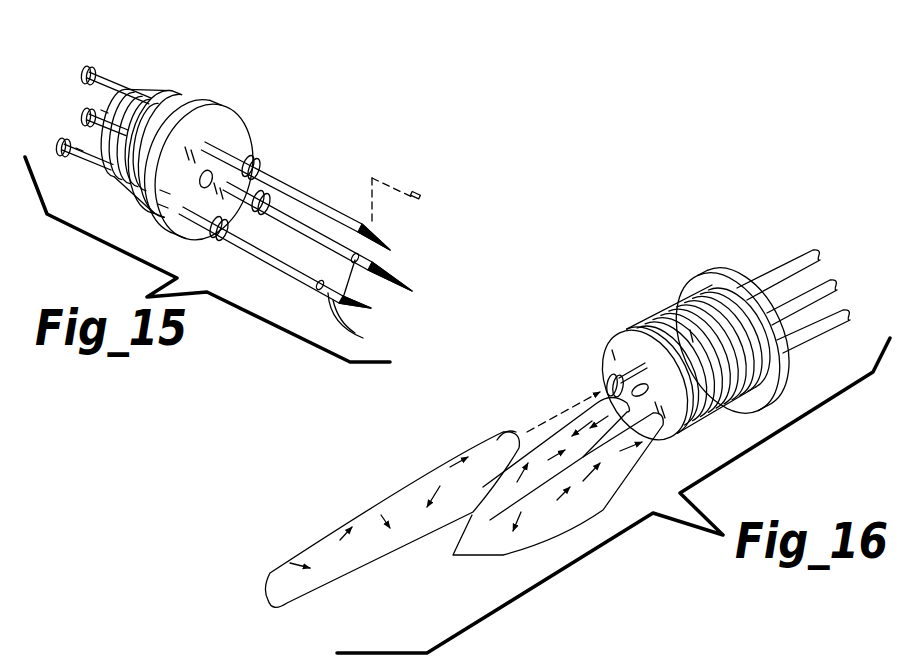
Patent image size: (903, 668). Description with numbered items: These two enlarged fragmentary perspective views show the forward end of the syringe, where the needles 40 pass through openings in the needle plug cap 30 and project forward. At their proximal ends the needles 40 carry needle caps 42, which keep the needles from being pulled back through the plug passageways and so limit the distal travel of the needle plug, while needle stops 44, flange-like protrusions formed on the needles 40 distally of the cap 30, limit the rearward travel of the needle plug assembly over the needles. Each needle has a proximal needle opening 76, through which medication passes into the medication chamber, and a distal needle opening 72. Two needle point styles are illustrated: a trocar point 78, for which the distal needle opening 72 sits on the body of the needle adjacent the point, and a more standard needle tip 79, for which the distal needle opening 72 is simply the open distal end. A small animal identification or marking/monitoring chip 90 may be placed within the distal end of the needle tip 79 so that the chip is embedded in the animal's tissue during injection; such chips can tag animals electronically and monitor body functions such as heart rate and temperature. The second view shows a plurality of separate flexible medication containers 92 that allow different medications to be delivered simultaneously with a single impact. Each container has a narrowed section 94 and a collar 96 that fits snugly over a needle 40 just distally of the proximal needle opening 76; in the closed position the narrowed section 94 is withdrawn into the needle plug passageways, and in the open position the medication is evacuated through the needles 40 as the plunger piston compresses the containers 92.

In FIG. 15, the needle plug cap 30 is at (233, 108).
In FIG. 16, the needle plug cap 30 is at (710, 278).
In FIG. 15, the needles 40 is at (303, 190).
In FIG. 16, the needles 40 is at (770, 280).
In FIG. 15, the needle caps 42 is at (86, 70).
In FIG. 16, the needle caps 42 is at (612, 380).
In FIG. 15, the needle stops 44 is at (323, 115).
In FIG. 15, the distal needle opening 72 is at (377, 230).
In FIG. 15, the proximal needle opening 76 is at (107, 83).
In FIG. 16, the proximal needle opening 76 is at (630, 368).
In FIG. 15, the trocar point 78 is at (372, 309).
In FIG. 15, the needle tip 79 is at (385, 243).
In FIG. 15, the animal identification/monitoring chip 90 is at (417, 193).
In FIG. 16, the medication containers 92 is at (377, 502).
In FIG. 16, the narrowed section 94 is at (497, 433).
In FIG. 16, the collar 96 is at (530, 435).